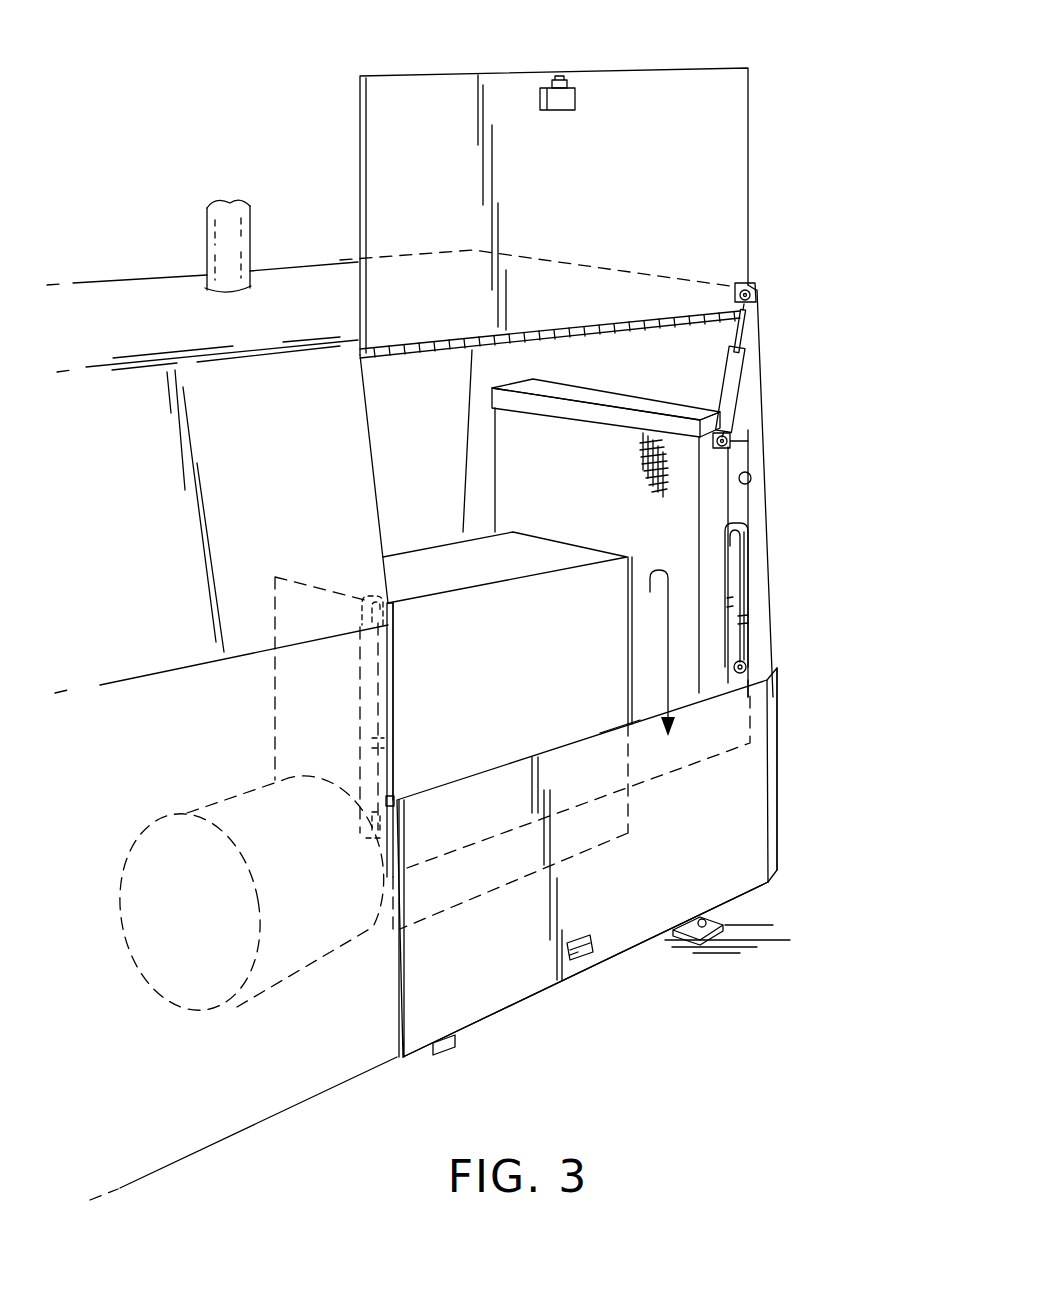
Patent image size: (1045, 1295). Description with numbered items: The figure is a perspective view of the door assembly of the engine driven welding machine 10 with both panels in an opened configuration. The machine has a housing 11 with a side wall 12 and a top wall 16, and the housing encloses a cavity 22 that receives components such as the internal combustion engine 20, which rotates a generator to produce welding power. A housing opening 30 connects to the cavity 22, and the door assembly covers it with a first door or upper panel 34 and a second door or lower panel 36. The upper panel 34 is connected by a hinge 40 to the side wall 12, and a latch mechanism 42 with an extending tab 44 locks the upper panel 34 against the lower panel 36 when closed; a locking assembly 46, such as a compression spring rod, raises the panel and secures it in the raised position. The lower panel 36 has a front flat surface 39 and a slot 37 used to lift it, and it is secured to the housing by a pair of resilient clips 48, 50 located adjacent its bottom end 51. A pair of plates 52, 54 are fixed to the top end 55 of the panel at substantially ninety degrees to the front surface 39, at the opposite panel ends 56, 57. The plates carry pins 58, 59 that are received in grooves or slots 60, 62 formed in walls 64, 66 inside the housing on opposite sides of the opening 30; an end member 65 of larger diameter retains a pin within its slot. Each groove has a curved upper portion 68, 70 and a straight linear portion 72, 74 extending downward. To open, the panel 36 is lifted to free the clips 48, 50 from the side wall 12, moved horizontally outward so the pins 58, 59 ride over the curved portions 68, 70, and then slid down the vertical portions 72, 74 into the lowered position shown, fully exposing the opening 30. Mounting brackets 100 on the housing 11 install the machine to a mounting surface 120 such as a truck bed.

The engine driven welding machine 10 is at (166, 222).
The housing 11 is at (252, 1088).
The side wall 12 is at (300, 1062).
The top wall 16 is at (128, 305).
The internal combustion engine 20 is at (428, 560).
The cavity 22 is at (397, 415).
The housing opening 30 is at (743, 467).
The first door or upper panel 34 is at (749, 171).
The second door or lower panel 36 is at (750, 808).
The slot 37 is at (582, 953).
The front flat surface 39 is at (737, 775).
The hinge 40 is at (407, 347).
The latch mechanism 42 is at (573, 95).
The extending tab 44 is at (558, 78).
The locking assembly 46 is at (728, 390).
The resilient clip 48 is at (445, 1055).
The resilient clip 50 is at (725, 908).
The bottom end 51 is at (520, 1008).
The plate 52 is at (394, 800).
The plate 54 is at (750, 665).
The top end 55 is at (600, 728).
The panel end 56 is at (400, 967).
The panel end 57 is at (770, 842).
The pin 58 is at (400, 750).
The pin 59 is at (740, 665).
The groove or slot 60 is at (384, 687).
The groove or slot 62 is at (740, 573).
The wall 64 is at (367, 713).
The end member 65 is at (347, 810).
The wall 66 is at (730, 565).
The curved upper portion 68 is at (370, 598).
The curved upper portion 70 is at (745, 527).
The straight linear portion 72 is at (380, 743).
The straight linear portion 74 is at (740, 600).
The mounting bracket 100 is at (707, 937).
The mounting surface 120 is at (743, 933).